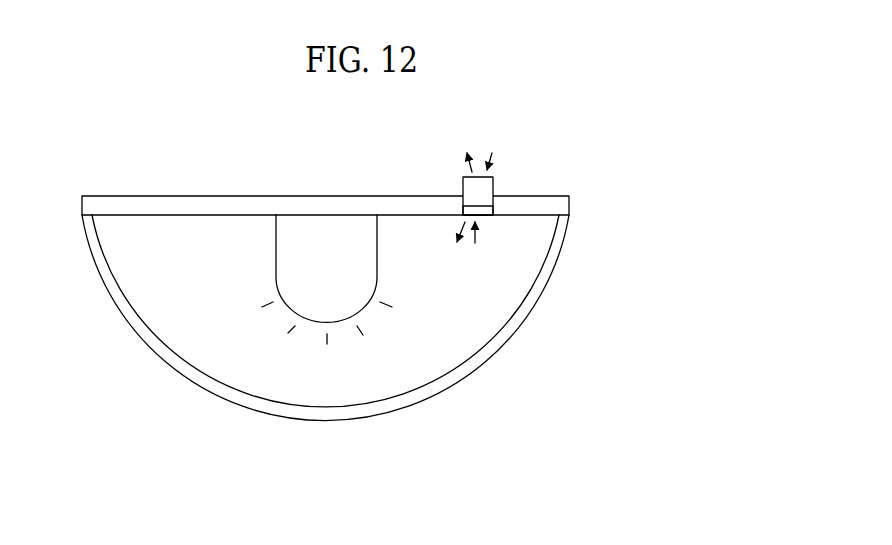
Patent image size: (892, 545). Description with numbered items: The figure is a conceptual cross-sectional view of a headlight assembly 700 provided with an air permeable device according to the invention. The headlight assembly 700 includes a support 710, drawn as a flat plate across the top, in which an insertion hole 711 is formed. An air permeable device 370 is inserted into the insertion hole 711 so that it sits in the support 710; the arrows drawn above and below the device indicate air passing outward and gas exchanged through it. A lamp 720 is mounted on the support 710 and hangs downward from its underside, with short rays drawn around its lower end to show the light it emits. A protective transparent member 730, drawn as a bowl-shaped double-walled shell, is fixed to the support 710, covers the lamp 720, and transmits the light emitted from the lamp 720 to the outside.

The headlight assembly 700 is at (374, 293).
The support 710 is at (560, 207).
The insertion hole 711 is at (493, 208).
The lamp 720 is at (305, 297).
The protective transparent member 730 is at (543, 282).
The air permeable device 370 is at (490, 188).